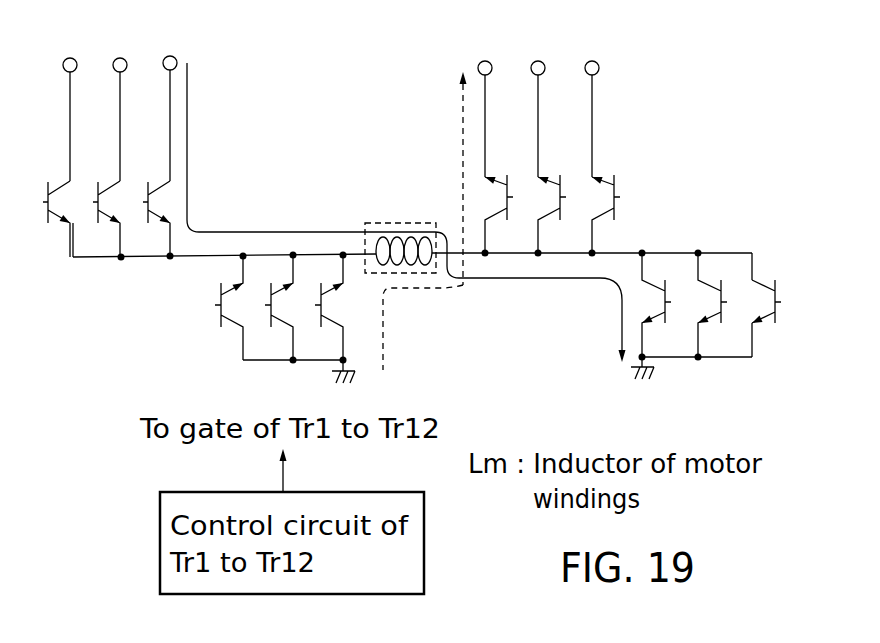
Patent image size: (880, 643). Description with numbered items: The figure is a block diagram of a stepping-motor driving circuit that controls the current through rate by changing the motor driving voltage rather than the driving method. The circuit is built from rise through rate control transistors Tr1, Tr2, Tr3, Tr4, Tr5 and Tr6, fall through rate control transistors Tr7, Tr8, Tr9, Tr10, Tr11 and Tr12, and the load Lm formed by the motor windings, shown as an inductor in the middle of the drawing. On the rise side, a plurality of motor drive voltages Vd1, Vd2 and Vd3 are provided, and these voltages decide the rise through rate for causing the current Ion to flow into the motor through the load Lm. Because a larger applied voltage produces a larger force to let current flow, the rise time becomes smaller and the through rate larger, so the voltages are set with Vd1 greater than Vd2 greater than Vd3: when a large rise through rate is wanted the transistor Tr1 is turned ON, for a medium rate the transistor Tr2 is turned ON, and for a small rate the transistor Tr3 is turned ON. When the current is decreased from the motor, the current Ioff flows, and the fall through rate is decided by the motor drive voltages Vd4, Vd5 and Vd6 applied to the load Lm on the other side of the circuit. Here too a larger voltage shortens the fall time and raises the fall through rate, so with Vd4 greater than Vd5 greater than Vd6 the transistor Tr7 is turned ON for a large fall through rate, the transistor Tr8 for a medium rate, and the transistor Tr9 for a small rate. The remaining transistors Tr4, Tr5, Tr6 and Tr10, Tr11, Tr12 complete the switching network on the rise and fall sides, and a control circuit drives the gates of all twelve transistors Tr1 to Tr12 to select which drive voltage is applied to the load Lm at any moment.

The motor drive voltage Vd1 is at (169, 104).
The motor drive voltage Vd2 is at (119, 104).
The motor drive voltage Vd3 is at (69, 104).
The motor drive voltage Vd4 is at (485, 102).
The motor drive voltage Vd5 is at (538, 102).
The motor drive voltage Vd6 is at (592, 102).
The rise through rate control transistor Tr1 is at (148, 198).
The rise through rate control transistor Tr2 is at (97, 198).
The rise through rate control transistor Tr3 is at (47, 198).
The rise through rate control transistor Tr4 is at (653, 332).
The rise through rate control transistor Tr5 is at (708, 332).
The rise through rate control transistor Tr6 is at (769, 345).
The fall through rate control transistor Tr7 is at (507, 194).
The fall through rate control transistor Tr8 is at (561, 194).
The fall through rate control transistor Tr9 is at (616, 194).
The fall through rate control transistor Tr10 is at (341, 335).
The fall through rate control transistor Tr11 is at (274, 335).
The fall through rate control transistor Tr12 is at (211, 335).
The load of motor windings Lm is at (392, 267).
The current Ion is at (416, 178).
The current Ioff is at (423, 327).